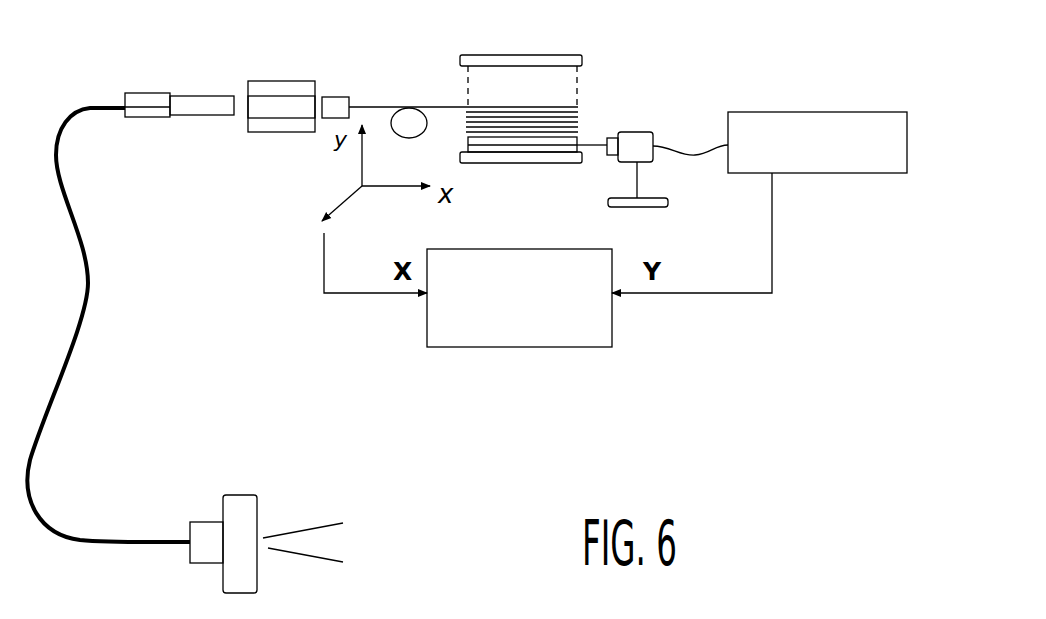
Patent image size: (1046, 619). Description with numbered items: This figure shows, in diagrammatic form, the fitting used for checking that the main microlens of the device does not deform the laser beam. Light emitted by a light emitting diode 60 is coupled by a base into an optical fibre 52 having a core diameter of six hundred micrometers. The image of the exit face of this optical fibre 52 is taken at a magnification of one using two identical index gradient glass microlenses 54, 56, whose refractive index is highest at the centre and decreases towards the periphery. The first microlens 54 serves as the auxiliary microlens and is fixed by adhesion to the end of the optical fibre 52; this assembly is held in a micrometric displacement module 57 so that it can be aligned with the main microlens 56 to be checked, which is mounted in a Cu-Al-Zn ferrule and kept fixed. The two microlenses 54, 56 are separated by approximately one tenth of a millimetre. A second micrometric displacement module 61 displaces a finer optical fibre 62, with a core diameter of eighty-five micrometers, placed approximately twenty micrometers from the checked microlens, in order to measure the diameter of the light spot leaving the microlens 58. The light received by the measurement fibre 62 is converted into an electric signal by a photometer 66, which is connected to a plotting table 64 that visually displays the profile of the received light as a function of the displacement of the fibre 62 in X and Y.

The optical fibre 52 is at (85, 348).
The auxiliary microlens 54 is at (203, 117).
The main microlens 56 is at (276, 110).
The micrometric displacement module 57 is at (148, 93).
The microlens 58 is at (270, 81).
The light emitting diode 60 is at (232, 490).
The second micrometric displacement module 61 is at (335, 97).
The measurement optical fibre 62 is at (386, 107).
The plotting table 64 is at (519, 298).
The photometer 66 is at (817, 143).